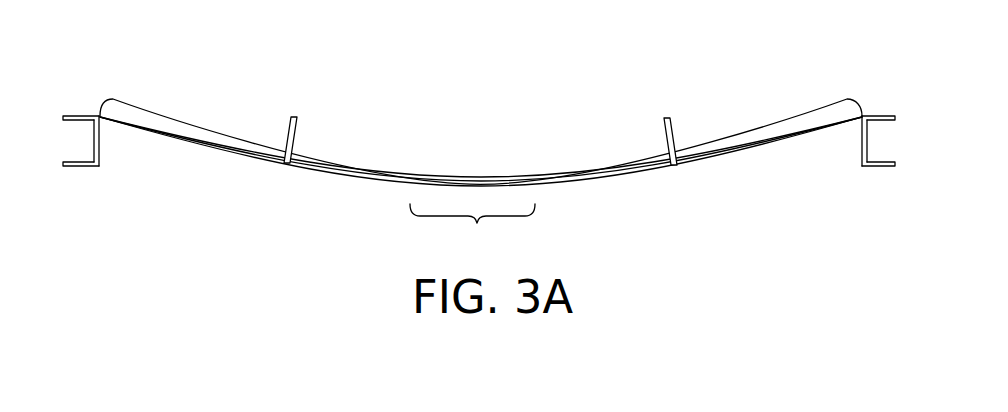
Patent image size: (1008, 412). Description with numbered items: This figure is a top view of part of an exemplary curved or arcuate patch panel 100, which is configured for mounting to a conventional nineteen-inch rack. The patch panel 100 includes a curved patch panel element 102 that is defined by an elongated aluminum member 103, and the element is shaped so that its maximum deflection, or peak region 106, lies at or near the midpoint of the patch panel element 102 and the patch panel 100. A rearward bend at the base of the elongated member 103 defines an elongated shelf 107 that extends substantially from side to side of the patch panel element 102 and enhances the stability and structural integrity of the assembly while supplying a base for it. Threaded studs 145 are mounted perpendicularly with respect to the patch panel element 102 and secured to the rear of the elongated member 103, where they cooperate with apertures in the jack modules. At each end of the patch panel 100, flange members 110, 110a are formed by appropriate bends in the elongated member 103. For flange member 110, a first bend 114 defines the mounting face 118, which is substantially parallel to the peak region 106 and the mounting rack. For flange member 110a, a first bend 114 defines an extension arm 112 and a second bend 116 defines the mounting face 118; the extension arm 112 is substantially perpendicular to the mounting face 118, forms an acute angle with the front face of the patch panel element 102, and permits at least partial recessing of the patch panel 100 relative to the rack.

The patch panel 100 is at (465, 172).
The patch panel element 102 is at (320, 177).
The elongated member 103 is at (481, 146).
The peak region 106 is at (472, 230).
The elongated shelf 107 is at (372, 159).
The flange member 110 is at (465, 143).
The flange member 110a is at (187, 249).
The extension arm 112 is at (101, 143).
The first bend 114 is at (97, 114).
The second bend 116 is at (99, 166).
The mounting face 118 is at (67, 167).
The threaded stud 145 is at (296, 127).